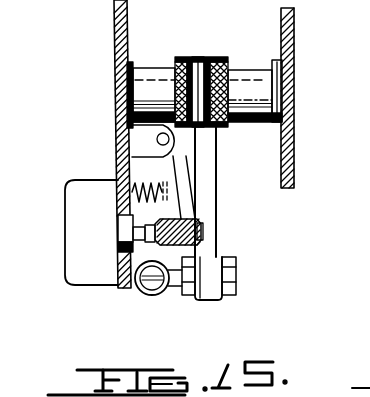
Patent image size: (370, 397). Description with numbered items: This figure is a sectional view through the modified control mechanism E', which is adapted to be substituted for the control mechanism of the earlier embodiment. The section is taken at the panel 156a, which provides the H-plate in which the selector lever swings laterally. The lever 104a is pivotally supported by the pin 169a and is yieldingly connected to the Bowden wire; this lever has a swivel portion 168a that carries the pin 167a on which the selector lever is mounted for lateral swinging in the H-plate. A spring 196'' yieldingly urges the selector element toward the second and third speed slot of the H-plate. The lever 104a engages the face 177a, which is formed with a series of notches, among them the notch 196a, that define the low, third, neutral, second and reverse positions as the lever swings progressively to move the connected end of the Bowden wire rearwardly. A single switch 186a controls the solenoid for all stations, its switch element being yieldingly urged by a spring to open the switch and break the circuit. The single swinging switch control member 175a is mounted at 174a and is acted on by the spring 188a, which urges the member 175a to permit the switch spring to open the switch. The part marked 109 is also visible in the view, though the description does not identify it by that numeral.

The control mechanism E' is at (104, 144).
The panel 156a is at (294, 34).
The spring 196'' is at (182, 70).
The pin 169a is at (259, 67).
The swivel portion 168a is at (240, 56).
The pin 167a is at (200, 128).
The mounting 174a is at (157, 139).
The swinging switch control member 175a is at (130, 172).
The spring 188a is at (133, 179).
The notch 196a is at (199, 238).
The lever 104a is at (216, 213).
The face 177a is at (200, 234).
The switch 186a is at (97, 278).
The screw 109 is at (165, 296).